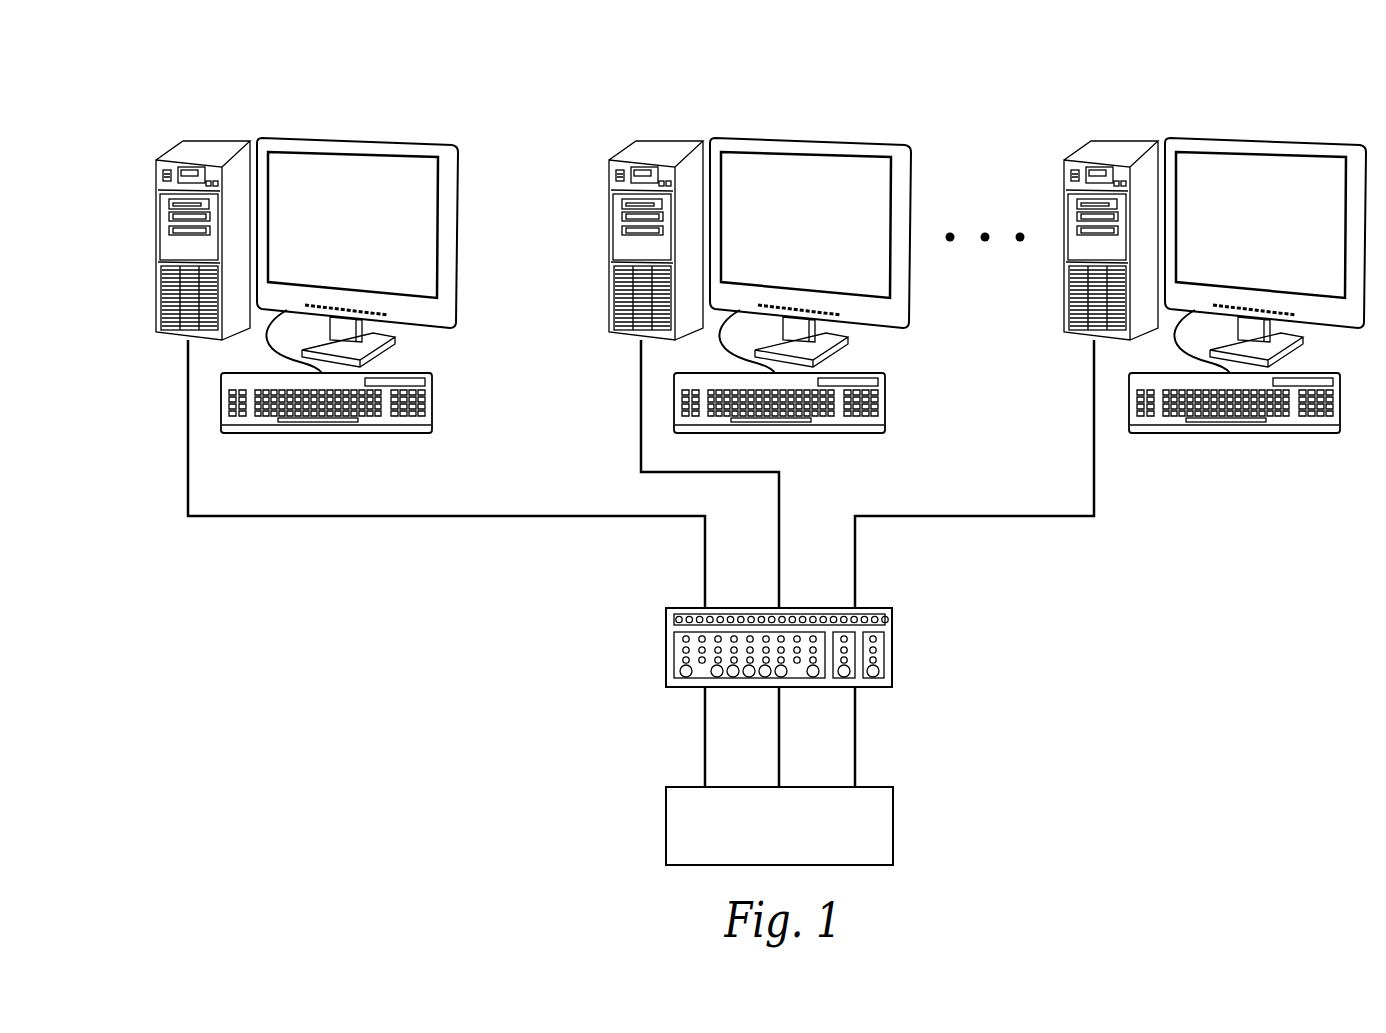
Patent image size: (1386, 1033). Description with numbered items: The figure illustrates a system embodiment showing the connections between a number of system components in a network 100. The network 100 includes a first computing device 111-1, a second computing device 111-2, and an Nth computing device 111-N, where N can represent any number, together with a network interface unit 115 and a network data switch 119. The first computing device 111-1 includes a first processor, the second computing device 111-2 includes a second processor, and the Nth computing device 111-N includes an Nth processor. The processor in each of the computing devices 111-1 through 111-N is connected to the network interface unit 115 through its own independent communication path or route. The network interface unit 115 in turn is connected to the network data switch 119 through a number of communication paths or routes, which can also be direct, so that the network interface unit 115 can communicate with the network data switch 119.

The network 100 is at (193, 76).
The first computing device 111-1 is at (358, 128).
The second computing device 111-2 is at (809, 128).
The Nth computing device 111-N is at (1267, 128).
The network interface unit 115 is at (653, 641).
The network data switch 119 is at (653, 819).